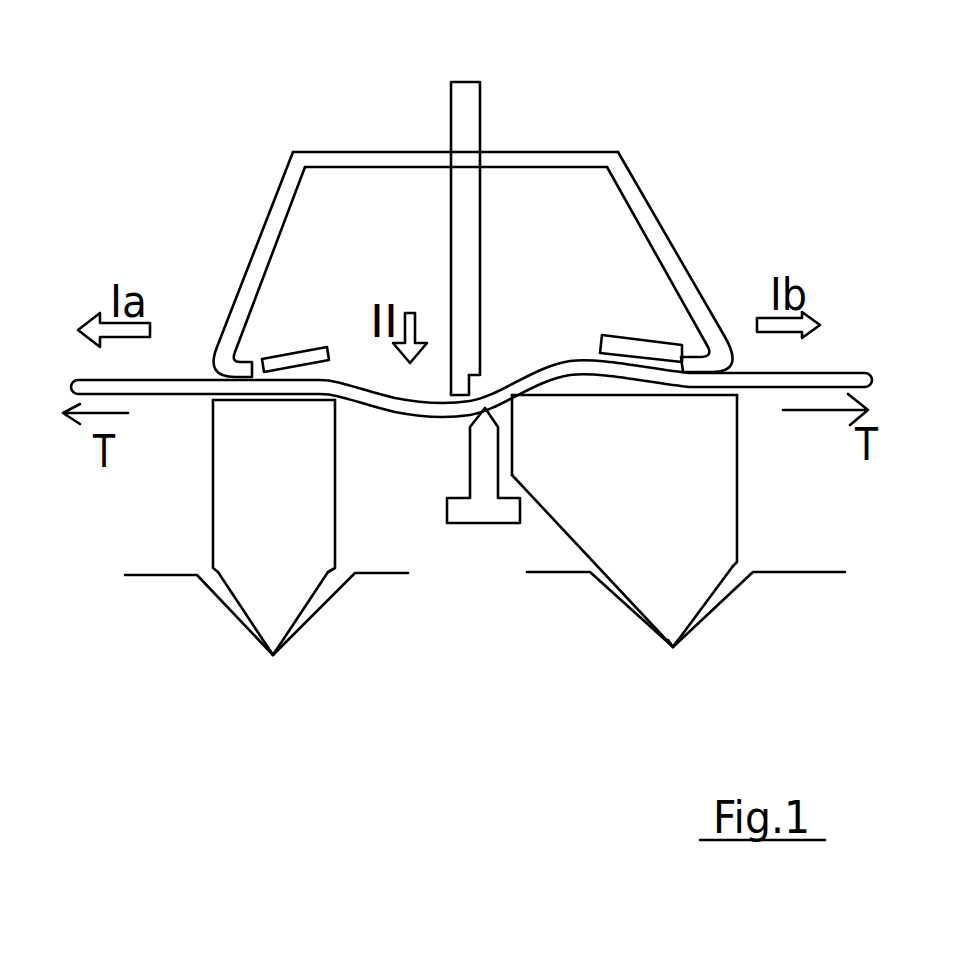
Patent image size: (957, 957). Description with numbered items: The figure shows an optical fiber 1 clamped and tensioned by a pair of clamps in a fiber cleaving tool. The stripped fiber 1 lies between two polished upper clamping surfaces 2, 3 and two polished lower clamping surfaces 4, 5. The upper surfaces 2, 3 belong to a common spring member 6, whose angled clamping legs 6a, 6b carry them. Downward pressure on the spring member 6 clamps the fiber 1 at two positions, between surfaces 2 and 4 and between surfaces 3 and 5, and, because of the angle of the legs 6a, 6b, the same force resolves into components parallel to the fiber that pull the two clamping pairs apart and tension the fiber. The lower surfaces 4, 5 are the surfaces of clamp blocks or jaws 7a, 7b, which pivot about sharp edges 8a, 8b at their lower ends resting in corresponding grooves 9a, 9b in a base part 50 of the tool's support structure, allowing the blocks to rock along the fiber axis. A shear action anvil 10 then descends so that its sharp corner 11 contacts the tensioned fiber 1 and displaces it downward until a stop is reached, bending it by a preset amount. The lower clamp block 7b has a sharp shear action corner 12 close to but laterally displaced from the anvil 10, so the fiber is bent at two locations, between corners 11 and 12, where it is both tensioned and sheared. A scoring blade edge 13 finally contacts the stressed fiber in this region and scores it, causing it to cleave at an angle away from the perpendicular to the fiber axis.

The optical fiber 1 is at (395, 404).
The upper clamping surface 2 is at (267, 360).
The upper clamping surface 3 is at (675, 345).
The lower clamping surface 4 is at (252, 405).
The lower clamping surface 5 is at (692, 398).
The spring member 6 is at (566, 148).
The clamping leg 6a is at (259, 218).
The clamping leg 6b is at (667, 227).
The clamp block 7a is at (207, 512).
The clamp block 7b is at (741, 488).
The sharp edge 8a is at (276, 638).
The sharp edge 8b is at (674, 627).
The groove 9a is at (272, 667).
The groove 9b is at (675, 655).
The shear action anvil 10 is at (462, 117).
The sharp corner 11 is at (459, 383).
The sharp shear action corner 12 is at (522, 405).
The scoring blade edge 13 is at (487, 422).
The base part 50 is at (345, 618).